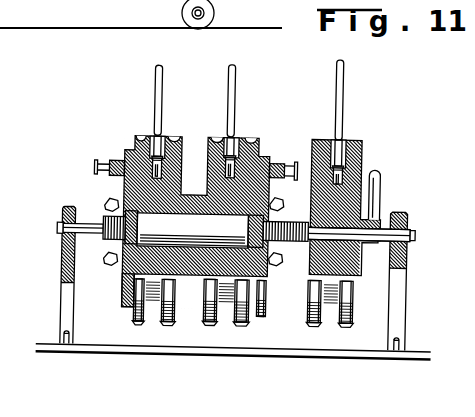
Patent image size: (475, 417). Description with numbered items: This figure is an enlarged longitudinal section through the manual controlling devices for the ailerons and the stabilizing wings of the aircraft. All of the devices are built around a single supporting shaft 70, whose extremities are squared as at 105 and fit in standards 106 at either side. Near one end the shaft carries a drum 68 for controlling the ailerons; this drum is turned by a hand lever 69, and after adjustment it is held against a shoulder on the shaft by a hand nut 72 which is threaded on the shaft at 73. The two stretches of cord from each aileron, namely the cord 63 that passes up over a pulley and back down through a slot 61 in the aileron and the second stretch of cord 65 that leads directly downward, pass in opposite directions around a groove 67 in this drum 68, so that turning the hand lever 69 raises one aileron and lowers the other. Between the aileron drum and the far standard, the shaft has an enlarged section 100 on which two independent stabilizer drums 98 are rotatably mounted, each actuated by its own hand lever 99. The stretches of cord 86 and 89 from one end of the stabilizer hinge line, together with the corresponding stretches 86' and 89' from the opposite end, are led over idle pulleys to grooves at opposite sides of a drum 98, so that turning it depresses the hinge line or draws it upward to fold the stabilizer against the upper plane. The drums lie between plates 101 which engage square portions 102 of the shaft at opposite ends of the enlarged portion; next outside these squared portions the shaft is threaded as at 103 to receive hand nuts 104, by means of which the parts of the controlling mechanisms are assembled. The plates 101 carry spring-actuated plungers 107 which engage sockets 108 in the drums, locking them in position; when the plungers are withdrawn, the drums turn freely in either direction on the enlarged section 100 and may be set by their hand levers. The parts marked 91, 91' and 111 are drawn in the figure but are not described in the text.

The slot 61 is at (313, 289).
The cord 63 is at (318, 137).
The second stretch of cord 65 is at (318, 326).
The groove 67 is at (353, 287).
The drum 68 is at (345, 191).
The hand lever 69 is at (349, 97).
The supporting shaft 70 is at (362, 211).
The hand nut 72 is at (380, 170).
The threaded portion of shaft 73 is at (407, 211).
The stretch of cord 86 is at (142, 133).
The cord stretch 86' is at (208, 121).
The stretch of cord 89 is at (132, 313).
The cord stretch 89' is at (217, 314).
The lug 91 is at (136, 121).
The lug 91' is at (222, 128).
The drum 98 is at (120, 269).
The hand lever 99 is at (152, 77).
The enlarged section of shaft 100 is at (128, 195).
The plates 101 is at (112, 162).
The square portions of shaft 102 is at (105, 224).
The threaded portion of shaft 103 is at (105, 246).
The hand nuts 104 is at (107, 265).
The squared extremities of shaft 105 is at (57, 232).
The standards 106 is at (63, 321).
The spring-actuated plungers 107 is at (92, 169).
The sockets 108 is at (131, 145).
The collar 111 is at (288, 248).